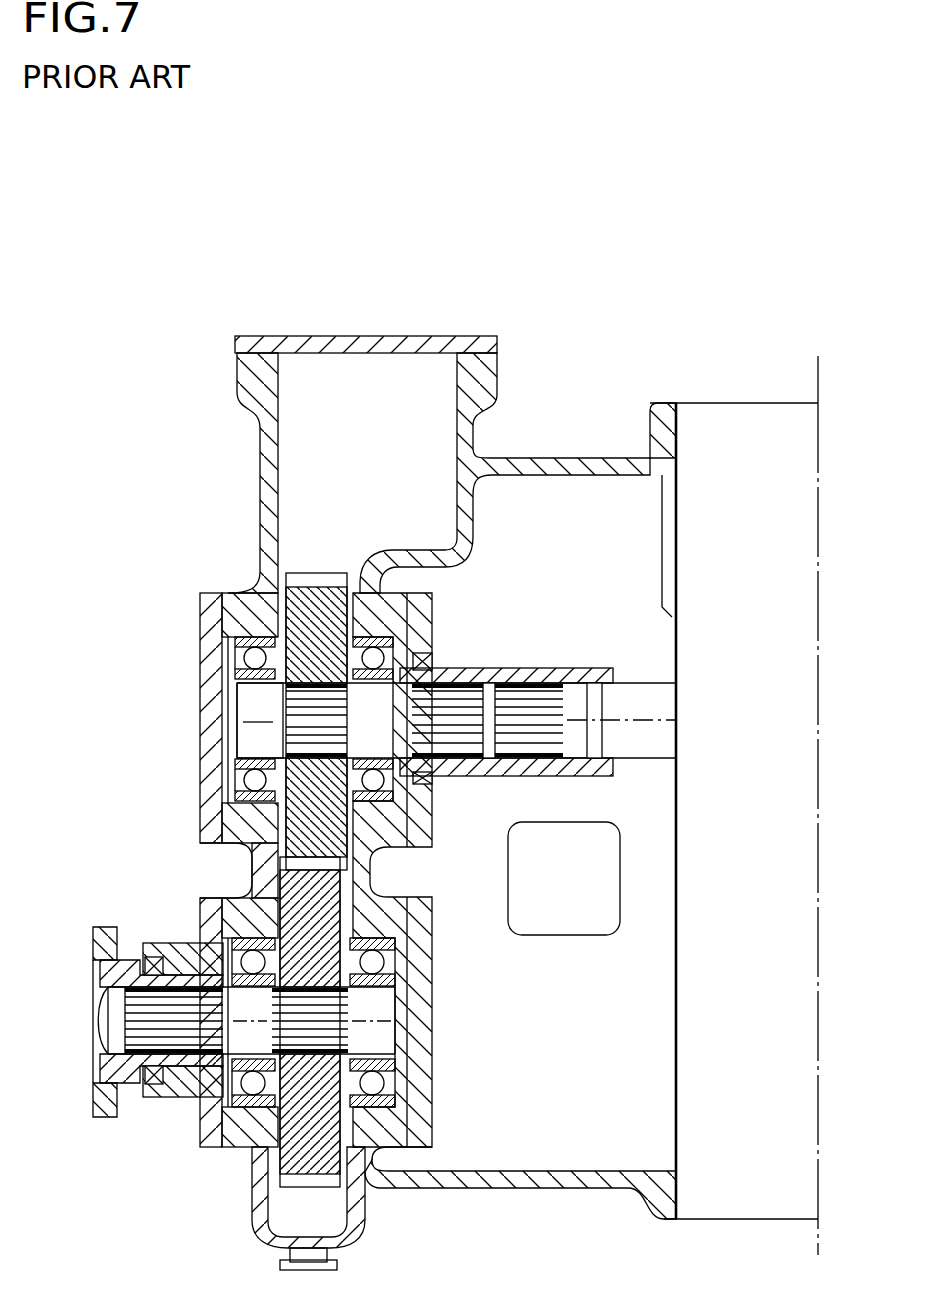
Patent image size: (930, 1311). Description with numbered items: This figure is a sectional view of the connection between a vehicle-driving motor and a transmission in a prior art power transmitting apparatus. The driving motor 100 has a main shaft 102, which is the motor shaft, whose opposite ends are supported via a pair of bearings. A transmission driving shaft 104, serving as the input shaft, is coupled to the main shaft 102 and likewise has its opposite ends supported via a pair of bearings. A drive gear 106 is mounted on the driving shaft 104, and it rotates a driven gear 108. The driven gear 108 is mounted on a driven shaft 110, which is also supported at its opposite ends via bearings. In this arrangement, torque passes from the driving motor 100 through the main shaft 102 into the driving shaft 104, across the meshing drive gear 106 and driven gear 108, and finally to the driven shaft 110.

The driving motor 100 is at (767, 398).
The main shaft 102 is at (641, 700).
The transmission driving shaft 104 is at (250, 705).
The drive gear 106 is at (307, 832).
The driven gear 108 is at (303, 1157).
The driven shaft 110 is at (378, 1020).